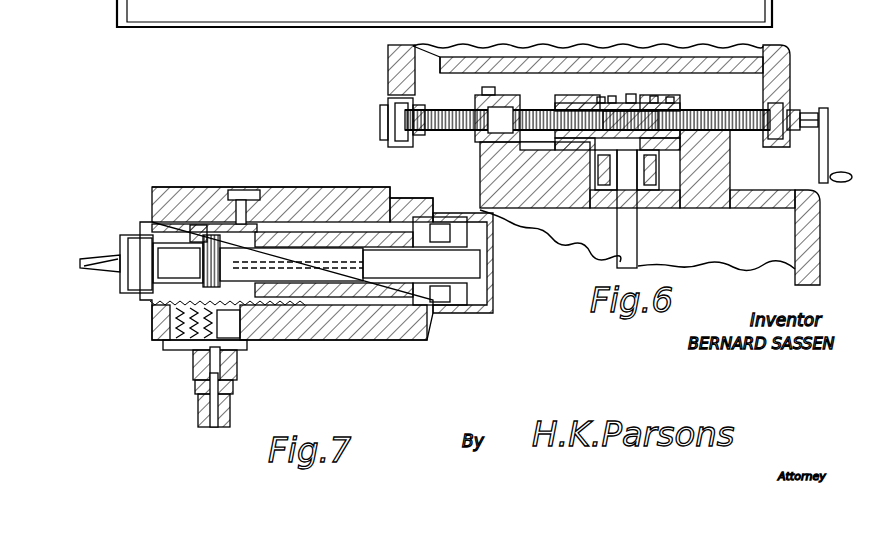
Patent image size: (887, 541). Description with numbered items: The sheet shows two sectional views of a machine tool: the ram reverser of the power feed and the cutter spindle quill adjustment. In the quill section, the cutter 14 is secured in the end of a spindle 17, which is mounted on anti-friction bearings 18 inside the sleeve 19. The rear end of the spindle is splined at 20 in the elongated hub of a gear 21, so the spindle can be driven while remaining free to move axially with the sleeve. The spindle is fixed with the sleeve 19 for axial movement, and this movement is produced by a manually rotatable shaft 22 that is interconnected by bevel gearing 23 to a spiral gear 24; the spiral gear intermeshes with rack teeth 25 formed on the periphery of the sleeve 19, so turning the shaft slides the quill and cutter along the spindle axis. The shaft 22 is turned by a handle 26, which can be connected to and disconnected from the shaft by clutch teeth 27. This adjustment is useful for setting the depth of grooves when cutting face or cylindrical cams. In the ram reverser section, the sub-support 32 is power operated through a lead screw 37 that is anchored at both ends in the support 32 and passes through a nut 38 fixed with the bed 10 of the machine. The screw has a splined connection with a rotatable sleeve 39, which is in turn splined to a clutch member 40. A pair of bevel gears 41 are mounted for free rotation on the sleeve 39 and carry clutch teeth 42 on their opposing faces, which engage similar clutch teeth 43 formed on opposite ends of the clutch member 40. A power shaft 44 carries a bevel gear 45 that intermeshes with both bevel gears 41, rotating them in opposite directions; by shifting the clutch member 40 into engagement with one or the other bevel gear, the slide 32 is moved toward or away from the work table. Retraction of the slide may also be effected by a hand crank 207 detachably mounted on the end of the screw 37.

In FIG. 6, the bed 10 is at (800, 190).
In FIG. 7, the cutter 14 is at (101, 256).
In FIG. 7, the spindle 17 is at (135, 238).
In FIG. 7, the anti-friction bearings 18 is at (208, 190).
In FIG. 7, the sleeve 19 is at (178, 190).
In FIG. 7, the spline 20 is at (290, 248).
In FIG. 7, the gear 21 is at (382, 198).
In FIG. 7, the manually rotatable shaft 22 is at (237, 363).
In FIG. 7, the bevel gearing 23 is at (198, 350).
In FIG. 7, the spiral gear 24 is at (185, 340).
In FIG. 7, the rack teeth 25 is at (168, 318).
In FIG. 7, the handle 26 is at (230, 412).
In FIG. 7, the clutch teeth 27 is at (233, 388).
In FIG. 6, the sub-support 32 is at (790, 76).
In FIG. 6, the lead screw 37 is at (722, 139).
In FIG. 6, the nut 38 is at (478, 142).
In FIG. 6, the rotatable sleeve 39 is at (700, 112).
In FIG. 6, the clutch member 40 is at (622, 103).
In FIG. 6, the bevel gears 41 is at (600, 97).
In FIG. 6, the clutch teeth 42 is at (612, 96).
In FIG. 6, the clutch teeth 43 is at (631, 94).
In FIG. 6, the power shaft 44 is at (638, 234).
In FIG. 6, the bevel gear 45 is at (590, 208).
In FIG. 6, the hand crank 207 is at (827, 148).